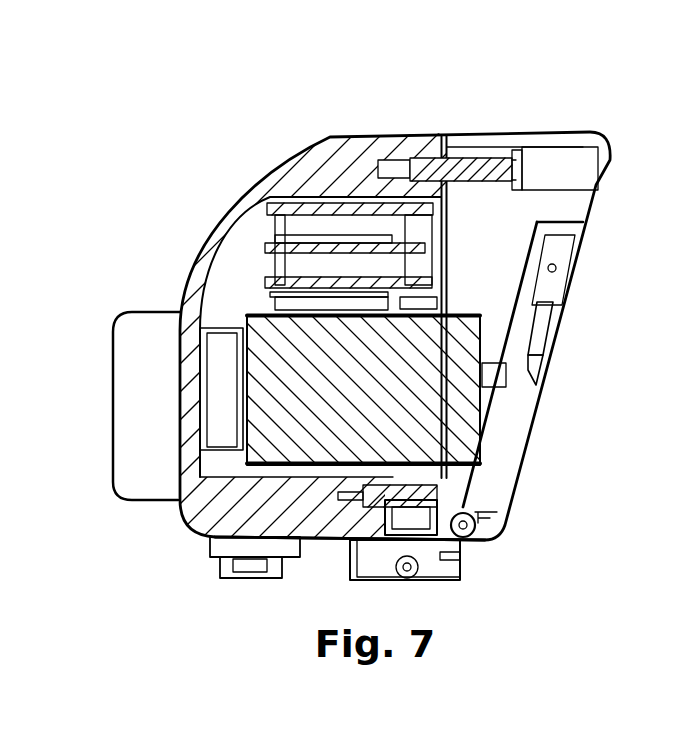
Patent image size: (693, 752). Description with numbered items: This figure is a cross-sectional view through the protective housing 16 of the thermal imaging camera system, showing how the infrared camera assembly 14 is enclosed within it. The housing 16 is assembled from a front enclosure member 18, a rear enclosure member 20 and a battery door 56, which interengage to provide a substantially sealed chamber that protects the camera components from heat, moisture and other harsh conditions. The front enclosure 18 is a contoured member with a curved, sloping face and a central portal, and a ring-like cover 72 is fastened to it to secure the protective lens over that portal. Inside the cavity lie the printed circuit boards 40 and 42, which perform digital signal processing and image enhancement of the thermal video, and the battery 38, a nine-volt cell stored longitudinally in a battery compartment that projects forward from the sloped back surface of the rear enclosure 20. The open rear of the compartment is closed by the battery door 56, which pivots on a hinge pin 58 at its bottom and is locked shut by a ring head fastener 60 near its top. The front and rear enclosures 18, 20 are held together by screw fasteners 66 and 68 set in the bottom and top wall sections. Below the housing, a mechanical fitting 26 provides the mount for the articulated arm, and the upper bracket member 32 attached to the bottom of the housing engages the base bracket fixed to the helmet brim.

The infrared camera assembly 14 is at (168, 528).
The protective housing 16 is at (405, 128).
The front enclosure member 18 is at (273, 165).
The rear enclosure member 20 is at (510, 130).
The mechanical fitting 26 is at (212, 553).
The upper bracket member 32 is at (460, 577).
The battery 38 is at (482, 342).
The printed circuit board 40 is at (272, 265).
The printed circuit board 42 is at (273, 210).
The battery door 56 is at (533, 407).
The hinge pin 58 is at (497, 513).
The ring head fastener 60 is at (583, 247).
The screw fastener 66 is at (440, 485).
The screw fastener 68 is at (522, 162).
The ring-like cover 72 is at (125, 316).